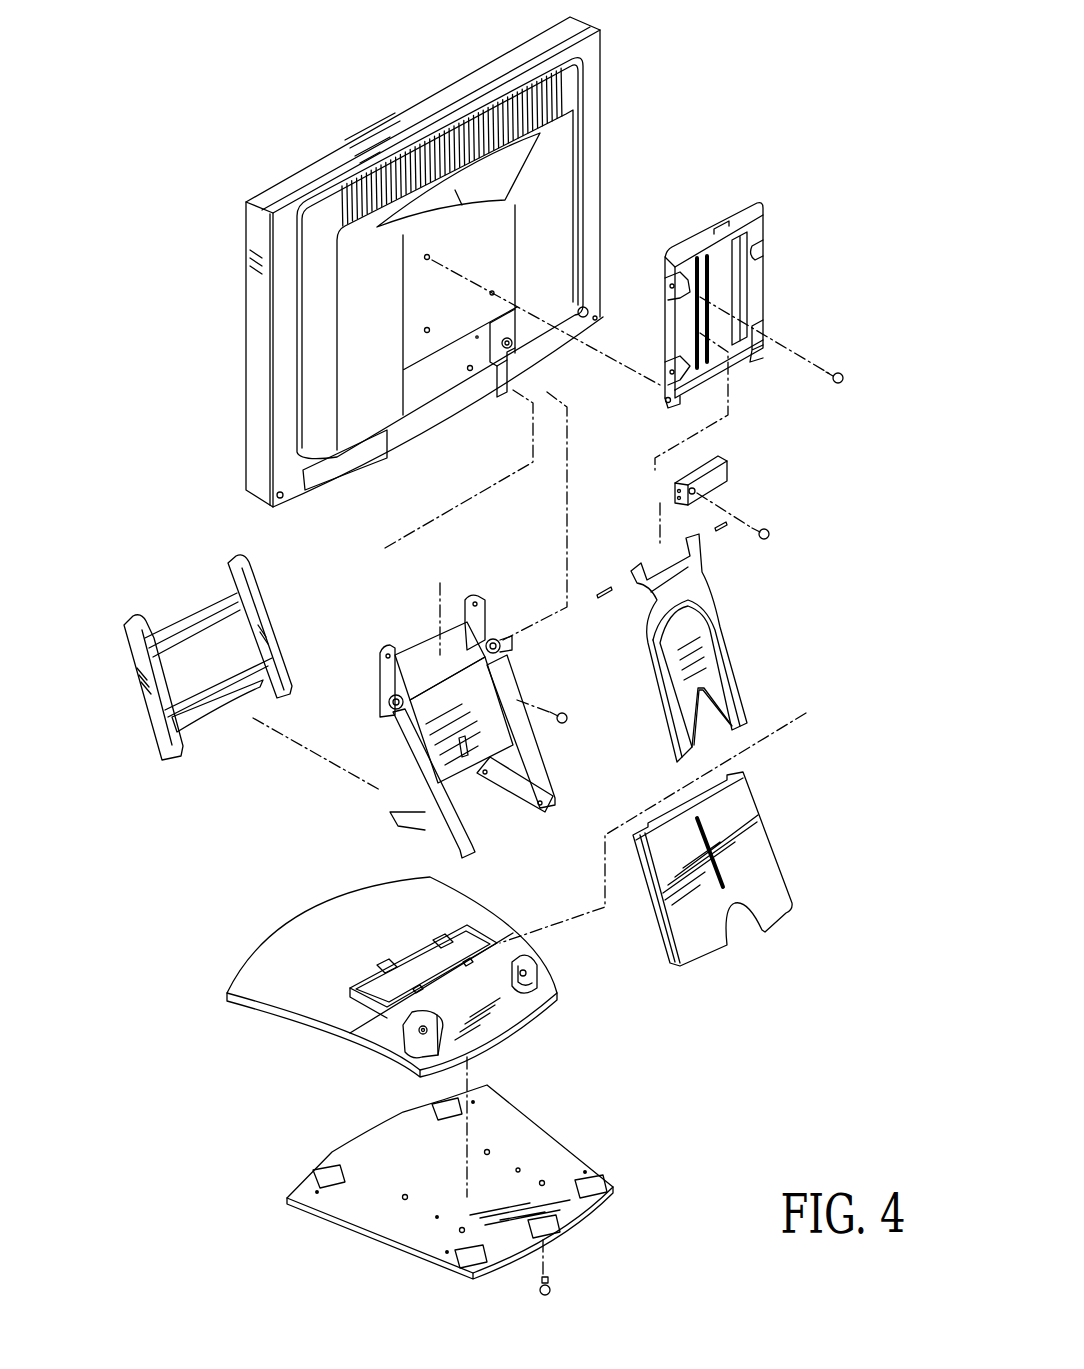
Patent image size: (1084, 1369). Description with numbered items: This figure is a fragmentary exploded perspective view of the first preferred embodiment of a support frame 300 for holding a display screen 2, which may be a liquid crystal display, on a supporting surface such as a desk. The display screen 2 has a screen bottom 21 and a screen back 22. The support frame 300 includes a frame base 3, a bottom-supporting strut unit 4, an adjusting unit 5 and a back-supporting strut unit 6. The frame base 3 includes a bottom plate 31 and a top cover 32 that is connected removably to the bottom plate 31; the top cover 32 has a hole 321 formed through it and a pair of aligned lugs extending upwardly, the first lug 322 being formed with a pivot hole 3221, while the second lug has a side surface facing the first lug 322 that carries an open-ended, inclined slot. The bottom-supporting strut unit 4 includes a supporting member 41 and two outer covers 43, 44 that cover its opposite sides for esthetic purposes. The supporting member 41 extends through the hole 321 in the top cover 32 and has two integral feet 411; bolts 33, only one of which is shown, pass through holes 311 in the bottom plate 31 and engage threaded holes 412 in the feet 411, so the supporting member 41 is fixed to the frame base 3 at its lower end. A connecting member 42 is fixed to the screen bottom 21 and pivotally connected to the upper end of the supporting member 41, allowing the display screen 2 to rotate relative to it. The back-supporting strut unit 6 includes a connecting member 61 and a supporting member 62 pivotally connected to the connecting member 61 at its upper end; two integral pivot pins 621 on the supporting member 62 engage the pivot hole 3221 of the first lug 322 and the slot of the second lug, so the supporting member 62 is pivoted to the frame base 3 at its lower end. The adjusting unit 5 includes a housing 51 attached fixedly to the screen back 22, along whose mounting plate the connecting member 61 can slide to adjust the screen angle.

The display screen 2 is at (210, 214).
The screen bottom 21 is at (402, 450).
The screen back 22 is at (490, 210).
The adjusting unit 5 is at (686, 197).
The housing 51 is at (770, 225).
The support frame 300 is at (852, 430).
The back-supporting strut unit 6 is at (818, 555).
The connecting member 61 is at (722, 472).
The supporting member 62 is at (722, 645).
The pivot pins 621 is at (750, 720).
The outer cover 44 is at (765, 845).
The bottom-supporting strut unit 4 is at (232, 808).
The supporting member 41 is at (405, 737).
The feet 411 is at (400, 821).
The threaded holes 412 is at (518, 790).
The connecting member 42 is at (425, 645).
The outer cover 43 is at (130, 622).
The frame base 3 is at (598, 1084).
The bottom plate 31 is at (489, 1182).
The holes 311 is at (544, 1182).
The top cover 32 is at (450, 1024).
The hole 321 is at (410, 965).
The first lug 322 is at (338, 1070).
The pivot hole 3221 is at (420, 1029).
The bolts 33 is at (550, 1290).